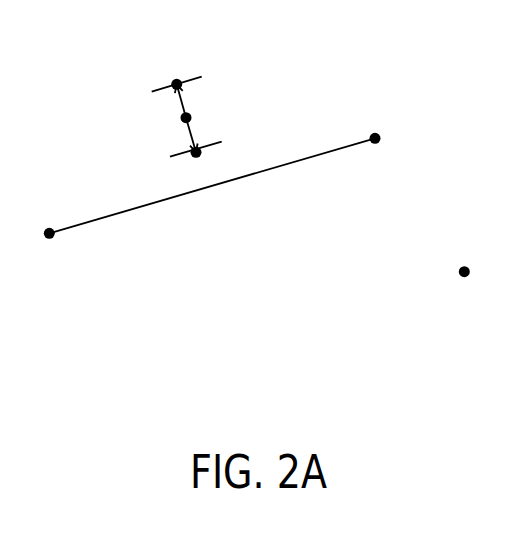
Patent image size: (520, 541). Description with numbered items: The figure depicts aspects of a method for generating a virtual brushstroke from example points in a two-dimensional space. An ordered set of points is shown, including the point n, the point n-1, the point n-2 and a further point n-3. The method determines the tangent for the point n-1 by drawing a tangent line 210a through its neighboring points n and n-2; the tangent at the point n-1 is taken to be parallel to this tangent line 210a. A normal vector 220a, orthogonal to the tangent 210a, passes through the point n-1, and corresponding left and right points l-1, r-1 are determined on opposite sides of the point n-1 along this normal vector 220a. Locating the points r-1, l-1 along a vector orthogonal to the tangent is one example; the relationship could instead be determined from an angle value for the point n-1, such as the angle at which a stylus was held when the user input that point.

The tangent line 210a is at (277, 167).
The normal vector 220a is at (156, 121).
The point n is at (57, 246).
The point n-1 is at (200, 112).
The point n-2 is at (370, 158).
The point n-3 is at (451, 294).
The right point r-1 is at (175, 70).
The left point l-1 is at (189, 170).